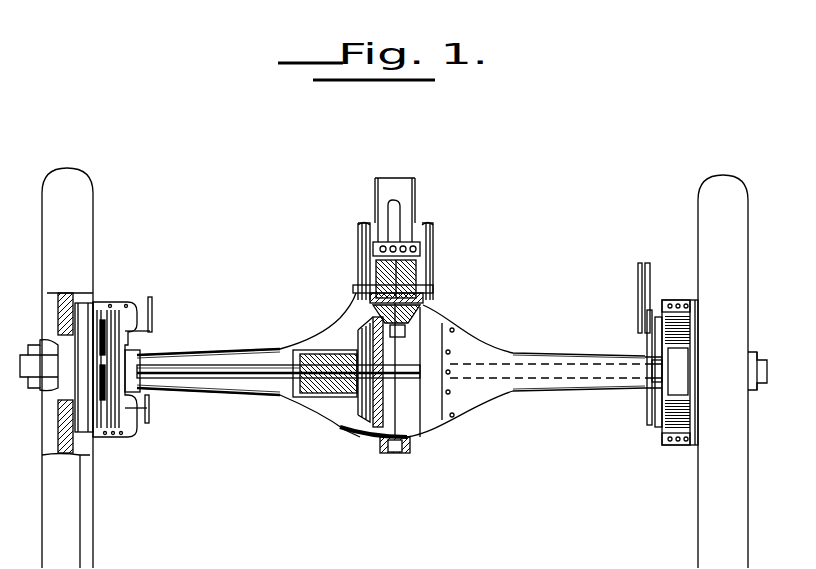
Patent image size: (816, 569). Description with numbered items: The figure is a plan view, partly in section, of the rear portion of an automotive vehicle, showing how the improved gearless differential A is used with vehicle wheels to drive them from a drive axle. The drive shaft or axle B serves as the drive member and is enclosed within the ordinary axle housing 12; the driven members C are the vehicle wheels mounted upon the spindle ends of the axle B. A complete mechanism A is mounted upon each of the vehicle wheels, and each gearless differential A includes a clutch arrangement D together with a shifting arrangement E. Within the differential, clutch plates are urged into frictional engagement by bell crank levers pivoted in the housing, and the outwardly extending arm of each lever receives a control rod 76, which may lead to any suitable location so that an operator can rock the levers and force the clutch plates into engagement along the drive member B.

The driven member C is at (70, 243).
The clutch arrangement D is at (108, 300).
The gearless differential A is at (113, 306).
The control rod 76 is at (155, 313).
The shifting arrangement E is at (150, 343).
The axle housing 12 is at (218, 355).
The drive shaft B is at (190, 372).